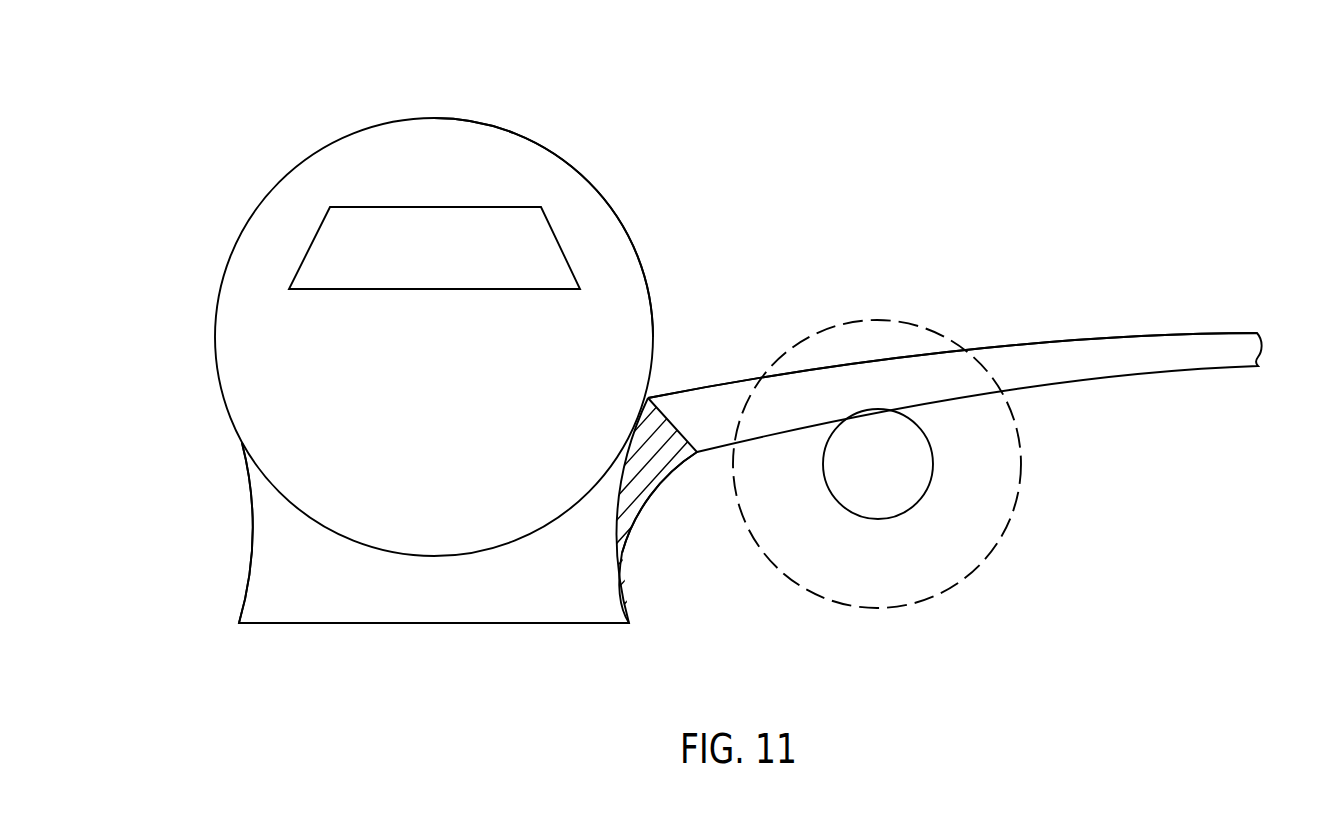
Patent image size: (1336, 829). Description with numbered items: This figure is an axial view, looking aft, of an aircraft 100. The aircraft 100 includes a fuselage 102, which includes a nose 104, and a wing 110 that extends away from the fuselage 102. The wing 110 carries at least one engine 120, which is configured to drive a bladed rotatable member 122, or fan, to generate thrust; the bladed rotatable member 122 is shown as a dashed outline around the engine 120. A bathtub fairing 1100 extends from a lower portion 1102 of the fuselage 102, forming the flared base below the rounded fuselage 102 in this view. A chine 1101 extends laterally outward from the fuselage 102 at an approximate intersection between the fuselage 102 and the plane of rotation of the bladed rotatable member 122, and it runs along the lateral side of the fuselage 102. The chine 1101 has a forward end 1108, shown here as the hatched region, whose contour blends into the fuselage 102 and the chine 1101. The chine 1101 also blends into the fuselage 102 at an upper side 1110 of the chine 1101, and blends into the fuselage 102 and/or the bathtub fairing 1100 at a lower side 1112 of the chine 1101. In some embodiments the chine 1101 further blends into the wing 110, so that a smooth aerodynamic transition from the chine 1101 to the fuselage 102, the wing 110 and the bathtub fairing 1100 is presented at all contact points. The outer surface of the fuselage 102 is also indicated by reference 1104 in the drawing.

The aircraft 100 is at (278, 83).
The fuselage 102 is at (543, 147).
The nose 104 is at (441, 423).
The wing 110 is at (1120, 342).
The engine 120 is at (891, 478).
The bladed rotatable member 122 is at (1020, 482).
The bathtub fairing 1100 is at (440, 595).
The chine 1101 is at (648, 495).
The lower portion 1102 is at (267, 480).
The housing outer surface 1104 is at (652, 302).
The forward end 1108 is at (653, 443).
The upper side 1110 is at (649, 398).
The lower side 1112 is at (620, 557).